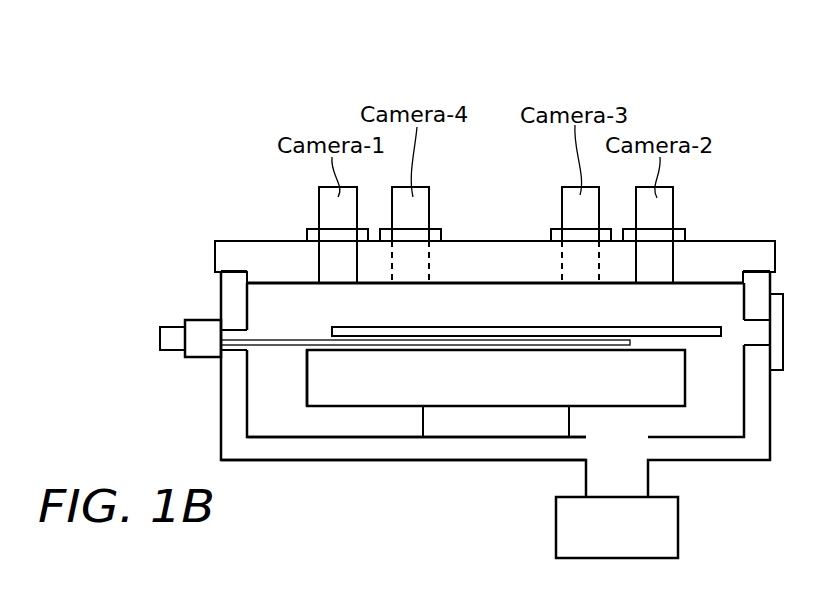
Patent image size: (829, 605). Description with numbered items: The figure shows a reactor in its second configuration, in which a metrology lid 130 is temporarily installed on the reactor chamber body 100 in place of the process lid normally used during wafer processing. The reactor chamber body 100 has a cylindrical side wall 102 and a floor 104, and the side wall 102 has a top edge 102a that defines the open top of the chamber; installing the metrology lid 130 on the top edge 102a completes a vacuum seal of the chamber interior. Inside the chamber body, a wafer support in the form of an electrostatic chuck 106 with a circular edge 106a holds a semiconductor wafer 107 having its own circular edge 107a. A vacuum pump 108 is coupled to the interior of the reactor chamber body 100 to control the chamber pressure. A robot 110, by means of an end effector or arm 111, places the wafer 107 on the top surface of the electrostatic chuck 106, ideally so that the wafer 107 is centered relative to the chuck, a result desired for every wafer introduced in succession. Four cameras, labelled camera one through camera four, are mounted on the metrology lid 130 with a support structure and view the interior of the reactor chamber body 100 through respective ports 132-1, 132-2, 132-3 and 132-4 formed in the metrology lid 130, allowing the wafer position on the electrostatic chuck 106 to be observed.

The reactor chamber body 100 is at (203, 297).
The cylindrical side wall 102 is at (230, 378).
The top edge 102a is at (236, 268).
The floor 104 is at (380, 448).
The electrostatic chuck 106 is at (305, 377).
The circular edge 106a is at (305, 392).
The semiconductor wafer 107 is at (496, 328).
The circular edge 107a is at (722, 334).
The vacuum pump 108 is at (567, 532).
The robot 110 is at (170, 337).
The end effector or arm 111 is at (477, 343).
The metrology lid 130 is at (210, 175).
The port 132-1 is at (332, 250).
The port 132-2 is at (670, 248).
The port 132-3 is at (576, 248).
The port 132-4 is at (422, 250).